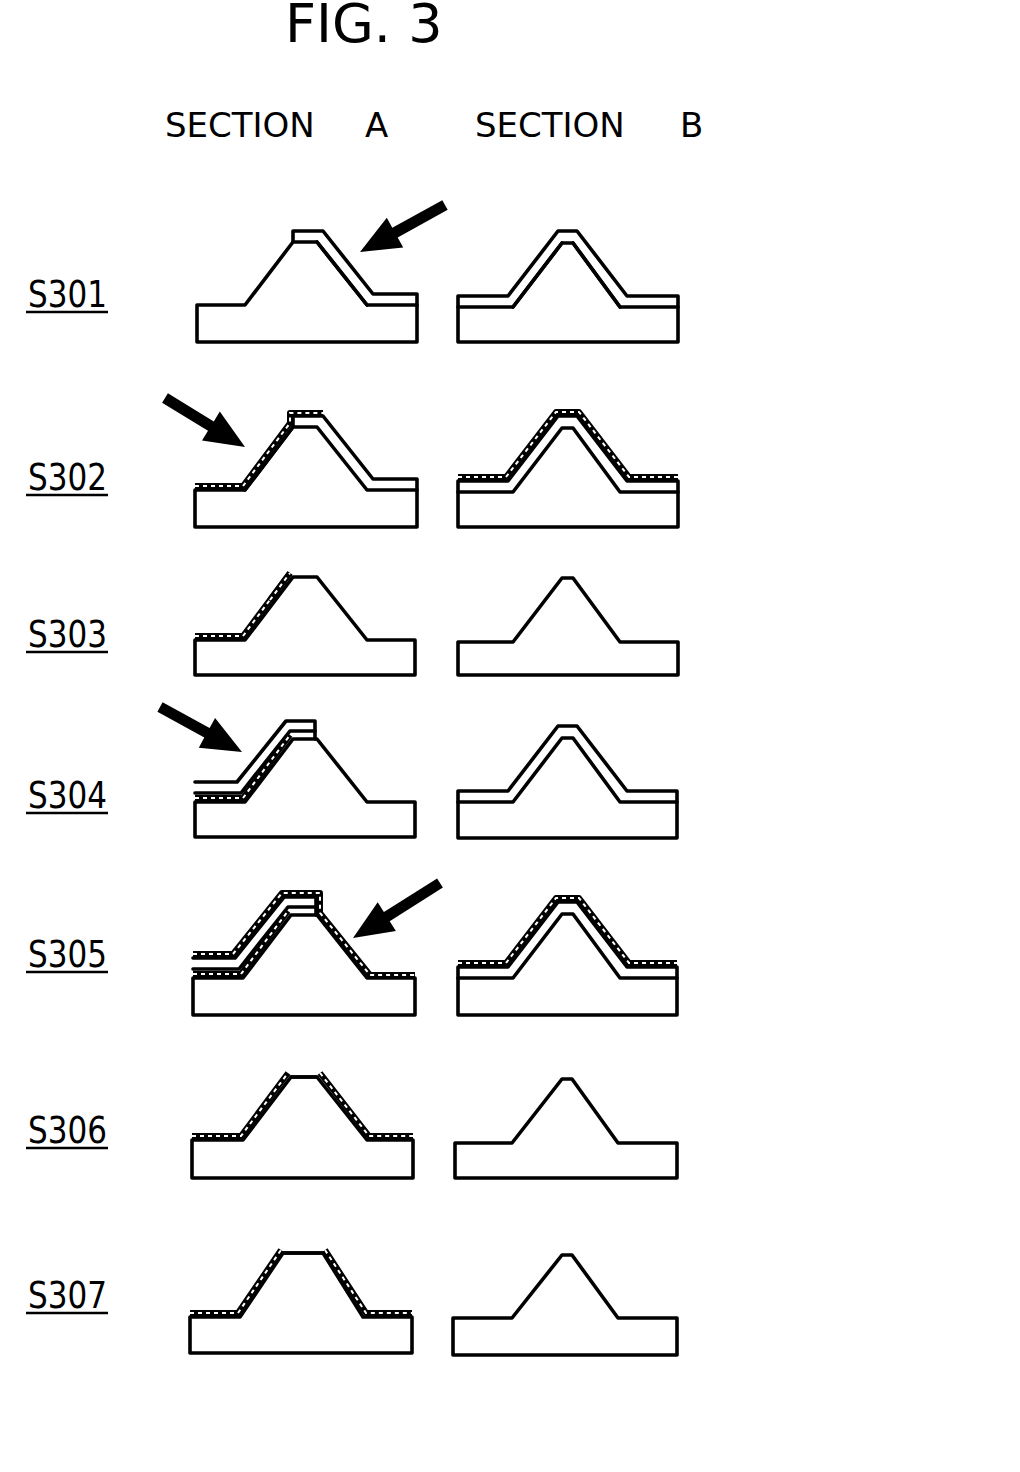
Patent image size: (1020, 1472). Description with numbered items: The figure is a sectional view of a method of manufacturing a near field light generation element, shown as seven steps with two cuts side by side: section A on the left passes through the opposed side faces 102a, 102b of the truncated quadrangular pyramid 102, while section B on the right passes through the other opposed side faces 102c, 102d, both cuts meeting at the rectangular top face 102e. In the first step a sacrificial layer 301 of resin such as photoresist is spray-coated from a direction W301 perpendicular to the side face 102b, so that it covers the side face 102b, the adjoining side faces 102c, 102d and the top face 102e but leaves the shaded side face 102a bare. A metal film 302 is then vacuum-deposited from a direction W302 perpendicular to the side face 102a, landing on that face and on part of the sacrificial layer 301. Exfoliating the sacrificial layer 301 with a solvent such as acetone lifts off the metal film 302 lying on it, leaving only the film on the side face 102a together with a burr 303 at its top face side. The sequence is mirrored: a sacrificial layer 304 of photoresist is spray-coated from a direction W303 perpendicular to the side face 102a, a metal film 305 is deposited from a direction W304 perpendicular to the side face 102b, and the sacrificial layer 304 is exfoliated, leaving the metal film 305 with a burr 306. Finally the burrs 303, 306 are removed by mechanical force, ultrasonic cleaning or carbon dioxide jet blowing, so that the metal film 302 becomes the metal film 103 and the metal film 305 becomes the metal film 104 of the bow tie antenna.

The truncated quadrangular pyramid 102 is at (303, 282).
The side face 102a is at (272, 458).
The side face 102b is at (342, 280).
The side face 102c is at (530, 288).
The side face 102d is at (600, 285).
The top face 102e is at (298, 1253).
The metal film 103 is at (260, 1278).
The metal film 104 is at (347, 1282).
The sacrificial layer 301 is at (307, 235).
The metal film 302 is at (277, 448).
The burr 303 is at (290, 577).
The sacrificial layer 304 is at (278, 740).
The metal film 305 is at (332, 923).
The burr 306 is at (317, 1077).
The direction W301 is at (410, 211).
The direction W302 is at (164, 417).
The direction W303 is at (158, 722).
The direction W304 is at (430, 904).